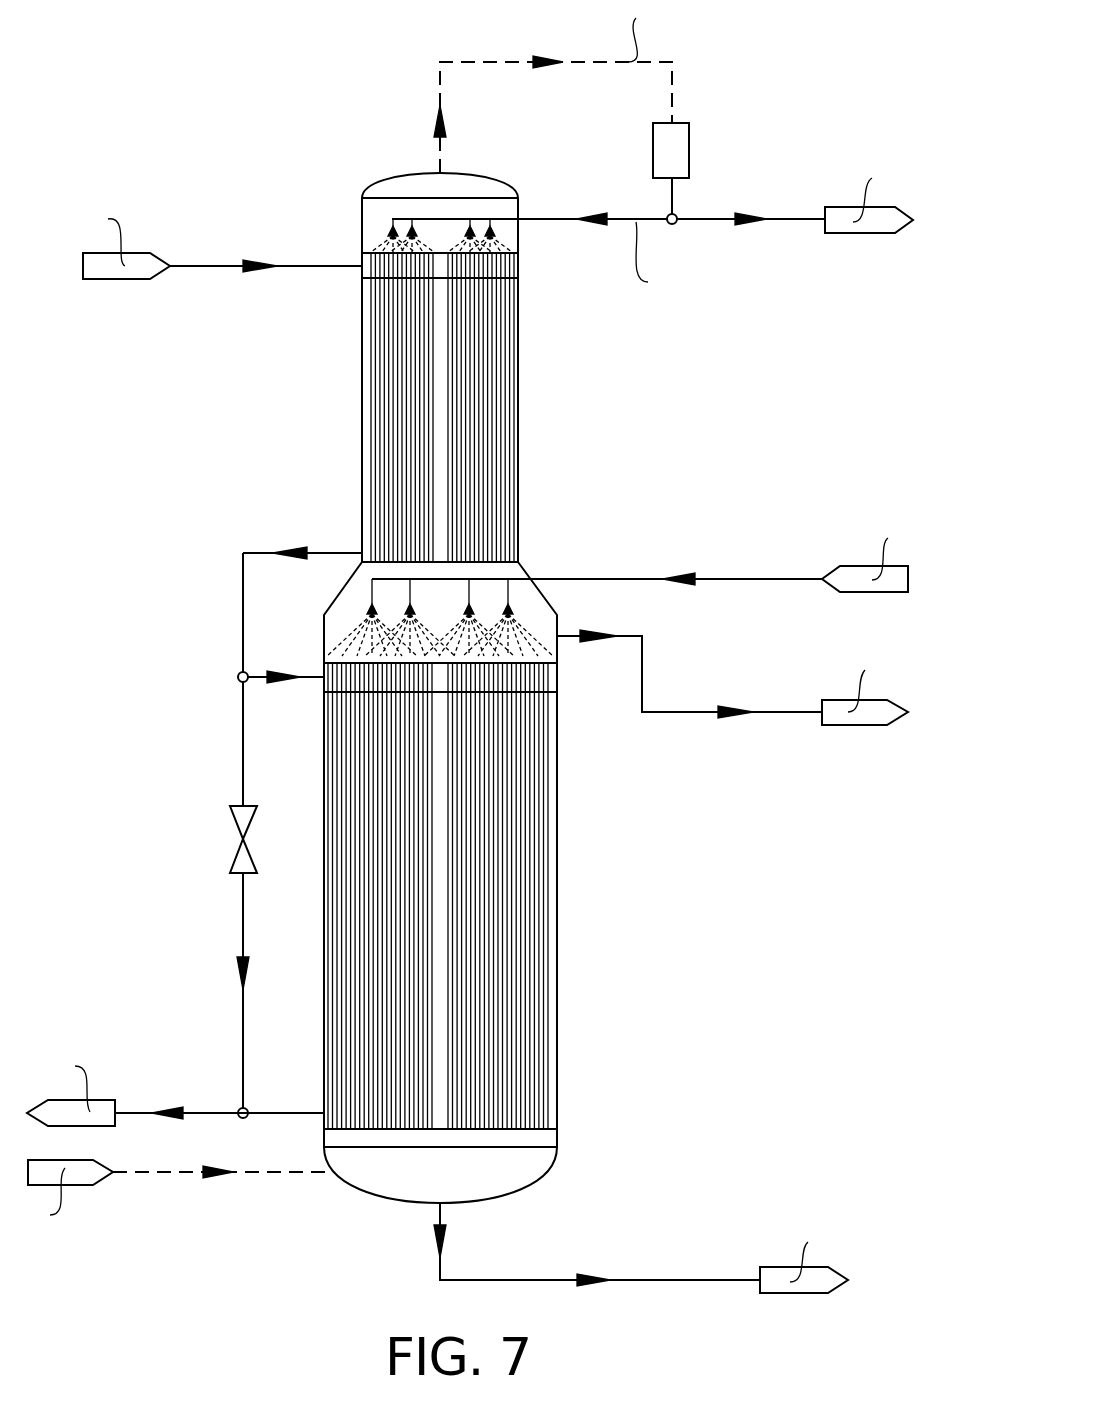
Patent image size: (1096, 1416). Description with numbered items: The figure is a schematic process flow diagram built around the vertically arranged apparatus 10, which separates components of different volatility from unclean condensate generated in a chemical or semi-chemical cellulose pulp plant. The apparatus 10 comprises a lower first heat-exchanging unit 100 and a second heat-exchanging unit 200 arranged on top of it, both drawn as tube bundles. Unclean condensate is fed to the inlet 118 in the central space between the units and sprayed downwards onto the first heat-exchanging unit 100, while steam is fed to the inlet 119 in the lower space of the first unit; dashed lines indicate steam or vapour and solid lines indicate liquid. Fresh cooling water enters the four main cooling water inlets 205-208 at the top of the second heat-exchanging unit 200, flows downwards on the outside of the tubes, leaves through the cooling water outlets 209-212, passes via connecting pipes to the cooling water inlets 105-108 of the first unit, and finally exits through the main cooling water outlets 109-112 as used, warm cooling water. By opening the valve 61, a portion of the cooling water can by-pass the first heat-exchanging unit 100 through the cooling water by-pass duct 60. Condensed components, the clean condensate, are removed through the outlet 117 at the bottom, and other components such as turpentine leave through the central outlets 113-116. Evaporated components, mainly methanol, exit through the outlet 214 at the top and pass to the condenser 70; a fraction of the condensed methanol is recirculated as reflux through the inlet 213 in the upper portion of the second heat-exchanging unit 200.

The apparatus 10 is at (217, 108).
The first heat-exchanging unit 100 is at (508, 930).
The second heat-exchanging unit 200 is at (403, 425).
The cooling water by-pass duct 60 is at (243, 745).
The valve 61 is at (233, 855).
The condenser 70 is at (703, 148).
The cooling water inlets 105-108 is at (322, 675).
The main cooling water outlets 109-112 is at (322, 1115).
The central outlets 113-116 is at (562, 637).
The outlet 117 is at (437, 1205).
The inlet 118 is at (533, 578).
The inlet 119 is at (335, 1170).
The main cooling water inlets 205-208 is at (360, 262).
The cooling water outlets 209-212 is at (360, 552).
The inlet 213 is at (519, 221).
The outlet 214 is at (432, 173).